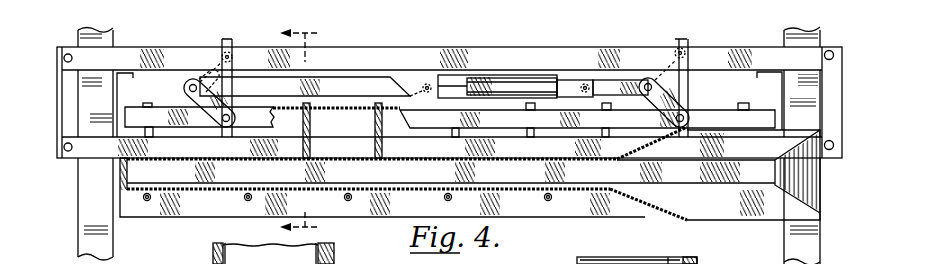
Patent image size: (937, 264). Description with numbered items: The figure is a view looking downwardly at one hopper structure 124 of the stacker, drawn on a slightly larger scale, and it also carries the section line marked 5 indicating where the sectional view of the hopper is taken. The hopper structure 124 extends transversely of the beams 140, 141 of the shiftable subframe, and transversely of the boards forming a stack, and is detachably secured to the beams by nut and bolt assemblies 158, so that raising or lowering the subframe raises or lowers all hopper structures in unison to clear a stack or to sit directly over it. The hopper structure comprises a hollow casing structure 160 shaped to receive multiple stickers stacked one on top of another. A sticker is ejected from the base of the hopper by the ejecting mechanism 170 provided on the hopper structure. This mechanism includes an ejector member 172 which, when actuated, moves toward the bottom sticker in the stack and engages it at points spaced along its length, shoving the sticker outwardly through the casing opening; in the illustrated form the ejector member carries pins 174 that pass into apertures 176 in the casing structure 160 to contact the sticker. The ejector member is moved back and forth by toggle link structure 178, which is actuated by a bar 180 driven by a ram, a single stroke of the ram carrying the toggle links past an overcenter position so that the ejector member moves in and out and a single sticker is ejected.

The hopper structure 124 is at (591, 222).
The beam 140 is at (115, 232).
The beam 141 is at (781, 247).
The nut and bolt assembly 158 is at (72, 61).
The hollow casing structure 160 is at (735, 211).
The ejecting mechanism 170 is at (321, 118).
The ejector member 172 is at (165, 99).
The pins 174 is at (370, 140).
The apertures 176 is at (296, 164).
The toggle link structure 178 is at (194, 78).
The bar 180 is at (324, 80).
The section line 5- 5 is at (312, 129).